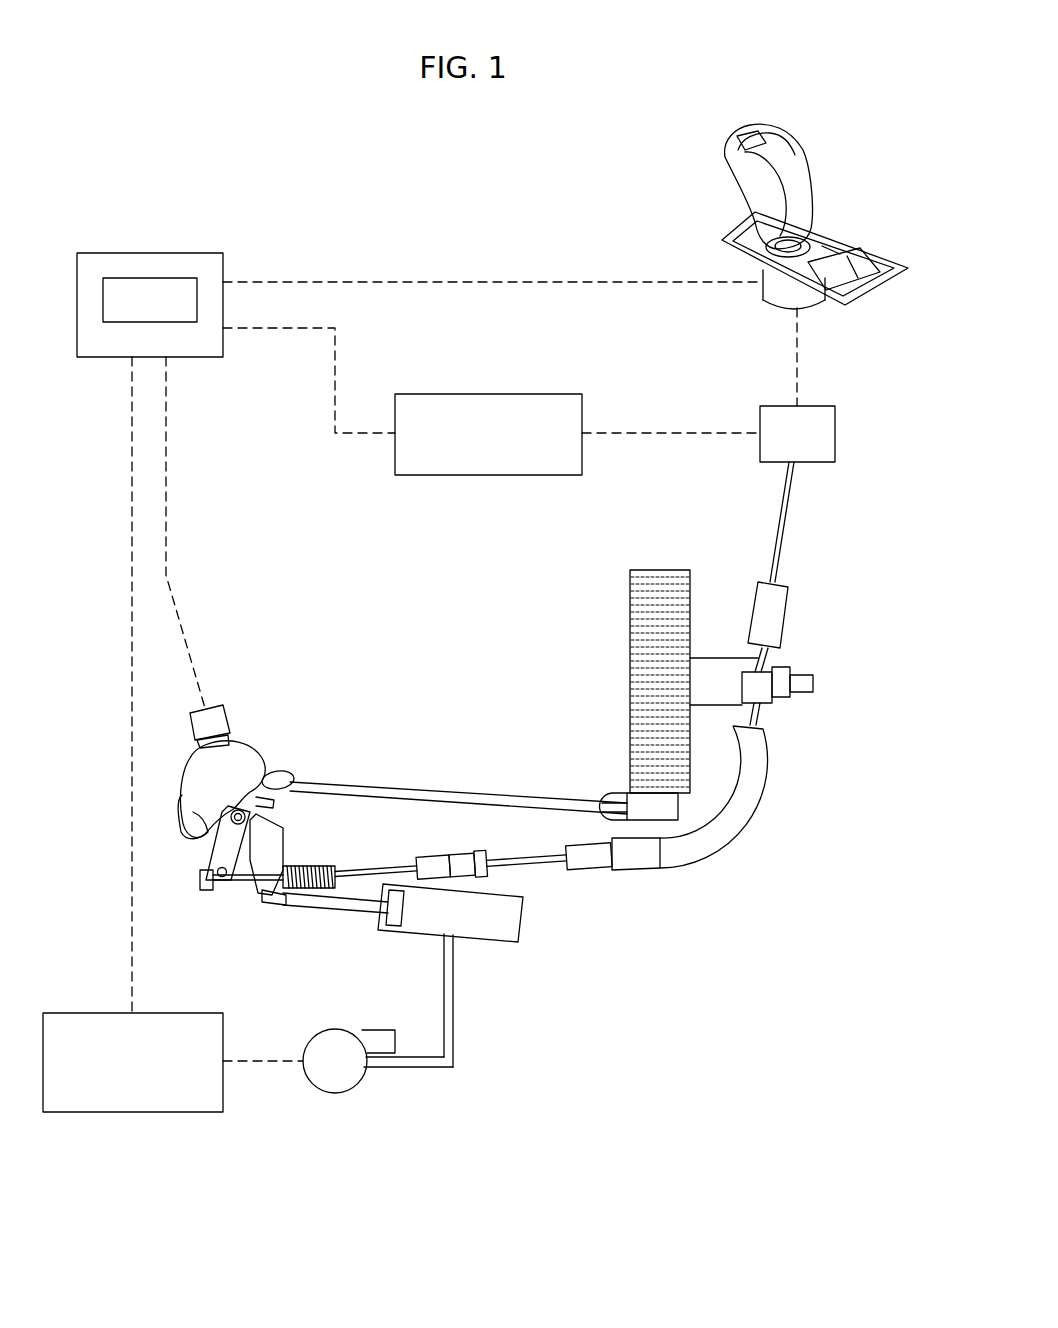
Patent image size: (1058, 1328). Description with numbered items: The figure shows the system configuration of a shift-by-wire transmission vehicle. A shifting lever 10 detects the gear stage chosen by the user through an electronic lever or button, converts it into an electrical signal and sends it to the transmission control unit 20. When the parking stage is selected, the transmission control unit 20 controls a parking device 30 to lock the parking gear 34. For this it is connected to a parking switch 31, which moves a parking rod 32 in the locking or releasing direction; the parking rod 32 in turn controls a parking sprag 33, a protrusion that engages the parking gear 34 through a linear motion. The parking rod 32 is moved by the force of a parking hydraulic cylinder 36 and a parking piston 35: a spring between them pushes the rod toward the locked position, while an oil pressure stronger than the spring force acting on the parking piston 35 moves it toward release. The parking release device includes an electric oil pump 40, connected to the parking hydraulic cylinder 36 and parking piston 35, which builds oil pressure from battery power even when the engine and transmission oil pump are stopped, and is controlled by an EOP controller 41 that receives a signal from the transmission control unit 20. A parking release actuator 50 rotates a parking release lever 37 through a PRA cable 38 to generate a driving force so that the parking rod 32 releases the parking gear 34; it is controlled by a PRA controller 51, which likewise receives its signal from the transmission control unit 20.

The shifting lever 10 is at (832, 234).
The transmission control unit (TCU) 20 is at (176, 253).
The parking device 30 is at (370, 728).
The parking switch 31 is at (255, 755).
The parking rod 32 is at (440, 790).
The parking sprag 33 is at (655, 822).
The parking gear 34 is at (630, 632).
The parking piston 35 is at (327, 907).
The parking hydraulic cylinder 36 is at (494, 936).
The parking release lever 37 is at (222, 897).
The PRA cable 38 is at (543, 868).
The electric oil pump (EOP) 40 is at (336, 1093).
The EOP controller 41 is at (131, 1112).
The parking release actuator (PRA) 50 is at (817, 462).
The PRA controller 51 is at (494, 394).